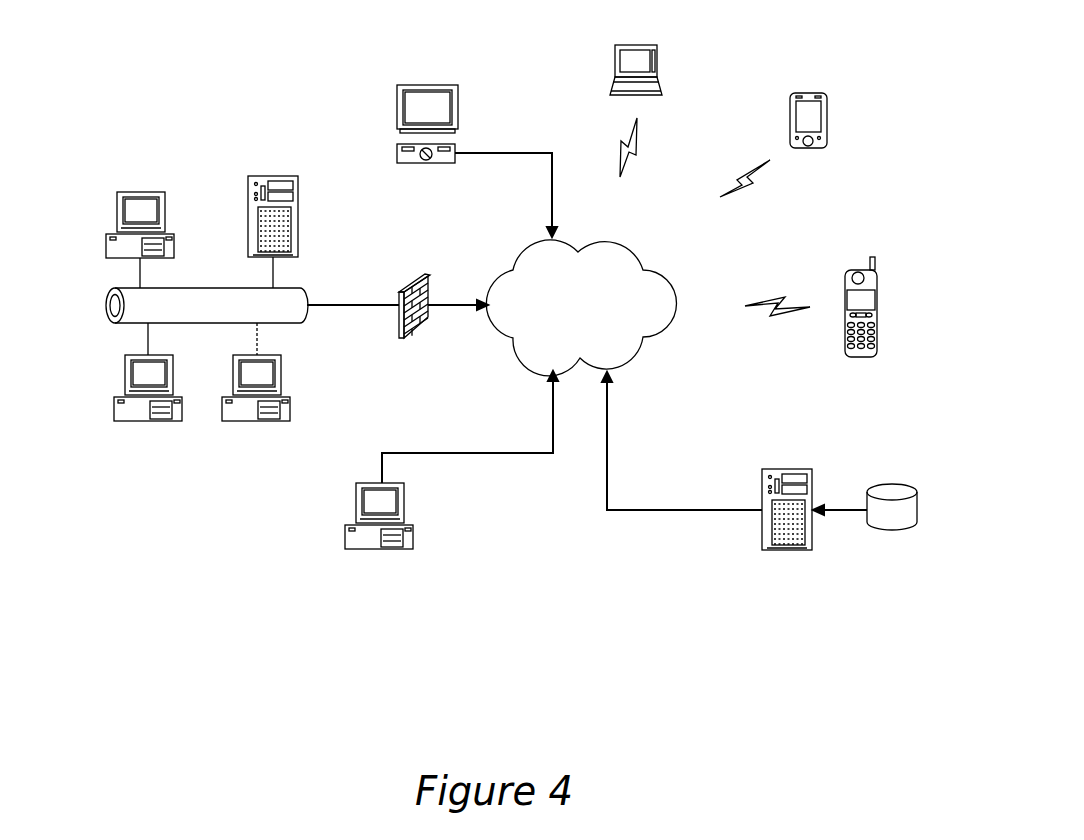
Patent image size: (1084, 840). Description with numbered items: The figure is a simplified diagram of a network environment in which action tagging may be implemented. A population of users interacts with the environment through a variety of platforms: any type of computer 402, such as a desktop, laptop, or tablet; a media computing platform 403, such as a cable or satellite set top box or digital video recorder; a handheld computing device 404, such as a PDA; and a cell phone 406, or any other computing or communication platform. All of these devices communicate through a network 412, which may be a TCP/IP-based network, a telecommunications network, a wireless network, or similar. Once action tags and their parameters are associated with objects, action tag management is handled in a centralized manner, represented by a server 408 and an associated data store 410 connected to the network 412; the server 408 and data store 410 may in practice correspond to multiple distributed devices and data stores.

The computer 402 is at (117, 217).
The media computing platform 403 is at (397, 150).
The handheld computing device 404 is at (795, 95).
The cell phone 406 is at (848, 273).
The server 408 is at (770, 467).
The data store 410 is at (893, 483).
The network 412 is at (527, 250).